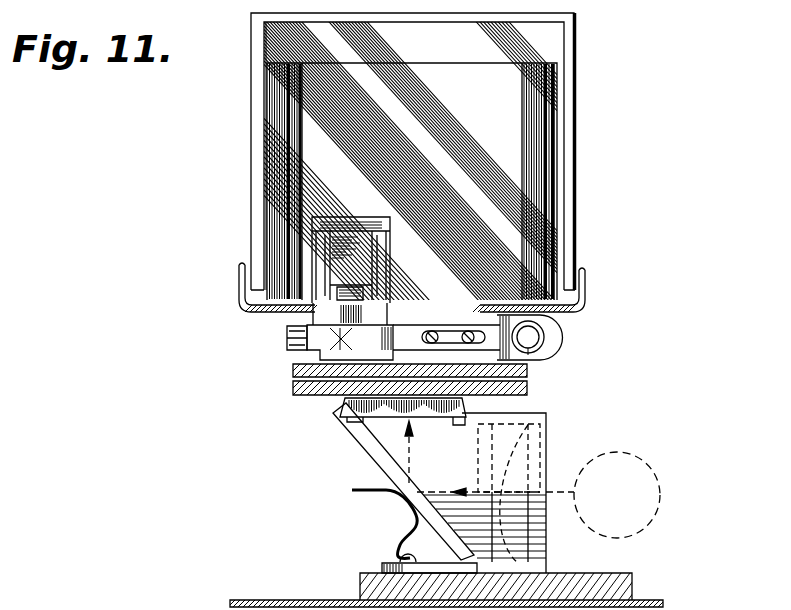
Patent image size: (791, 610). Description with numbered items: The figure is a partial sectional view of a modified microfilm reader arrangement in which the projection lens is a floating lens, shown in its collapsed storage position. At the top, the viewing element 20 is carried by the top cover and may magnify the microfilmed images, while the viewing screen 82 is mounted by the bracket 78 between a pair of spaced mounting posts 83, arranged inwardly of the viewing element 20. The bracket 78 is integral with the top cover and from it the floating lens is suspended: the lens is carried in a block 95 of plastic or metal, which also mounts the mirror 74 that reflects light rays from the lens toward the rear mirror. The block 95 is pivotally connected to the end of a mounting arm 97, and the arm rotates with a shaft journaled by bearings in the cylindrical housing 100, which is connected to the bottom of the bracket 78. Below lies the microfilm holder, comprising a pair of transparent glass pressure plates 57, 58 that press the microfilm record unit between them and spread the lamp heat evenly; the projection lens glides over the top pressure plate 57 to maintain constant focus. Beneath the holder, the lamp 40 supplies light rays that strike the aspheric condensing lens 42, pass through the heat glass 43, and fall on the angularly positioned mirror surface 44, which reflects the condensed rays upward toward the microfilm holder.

The viewing element 20 is at (552, 36).
The viewing screen 82 is at (408, 80).
The mounting posts 83 is at (540, 81).
The bracket 78 is at (242, 312).
The mirror 74 is at (346, 228).
The block 95 is at (312, 352).
The mounting arm 97 is at (440, 325).
The cylindrical housing 100 is at (560, 325).
The pressure plate 57 is at (527, 370).
The pressure plate 58 is at (527, 386).
The mirror surface 44 is at (360, 444).
The heat glass 43 is at (478, 449).
The aspheric condensing lens 42 is at (548, 456).
The lamp 40 is at (660, 481).